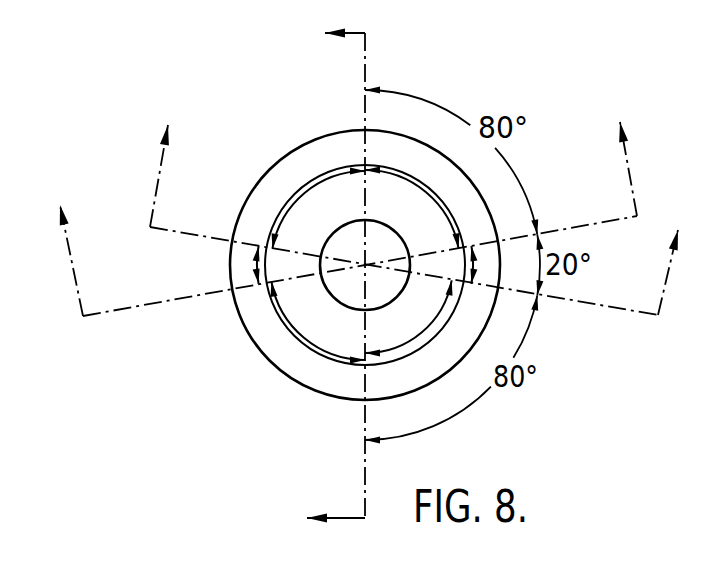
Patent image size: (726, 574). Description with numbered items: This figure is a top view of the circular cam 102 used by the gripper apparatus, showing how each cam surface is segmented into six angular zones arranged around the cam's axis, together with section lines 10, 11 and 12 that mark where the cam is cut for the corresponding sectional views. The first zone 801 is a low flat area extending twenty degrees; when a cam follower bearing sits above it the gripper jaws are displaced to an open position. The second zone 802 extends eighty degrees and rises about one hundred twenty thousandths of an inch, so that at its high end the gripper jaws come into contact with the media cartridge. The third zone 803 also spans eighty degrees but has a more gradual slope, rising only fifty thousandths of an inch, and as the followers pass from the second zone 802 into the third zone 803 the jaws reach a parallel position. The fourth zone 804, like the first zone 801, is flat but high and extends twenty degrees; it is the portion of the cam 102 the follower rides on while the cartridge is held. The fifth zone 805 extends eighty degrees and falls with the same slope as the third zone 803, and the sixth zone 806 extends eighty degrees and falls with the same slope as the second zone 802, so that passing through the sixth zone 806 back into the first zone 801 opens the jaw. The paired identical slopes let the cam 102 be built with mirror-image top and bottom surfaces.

The cam 102 is at (418, 80).
The first zone 801 is at (475, 272).
The second zone 802 is at (450, 218).
The third zone 803 is at (318, 186).
The fourth zone 804 is at (256, 265).
The fifth zone 805 is at (316, 348).
The sixth zone 806 is at (410, 342).
The section line 10- 10 is at (428, 204).
The section line 11- 11 is at (342, 200).
The section line 12- 12 is at (316, 276).